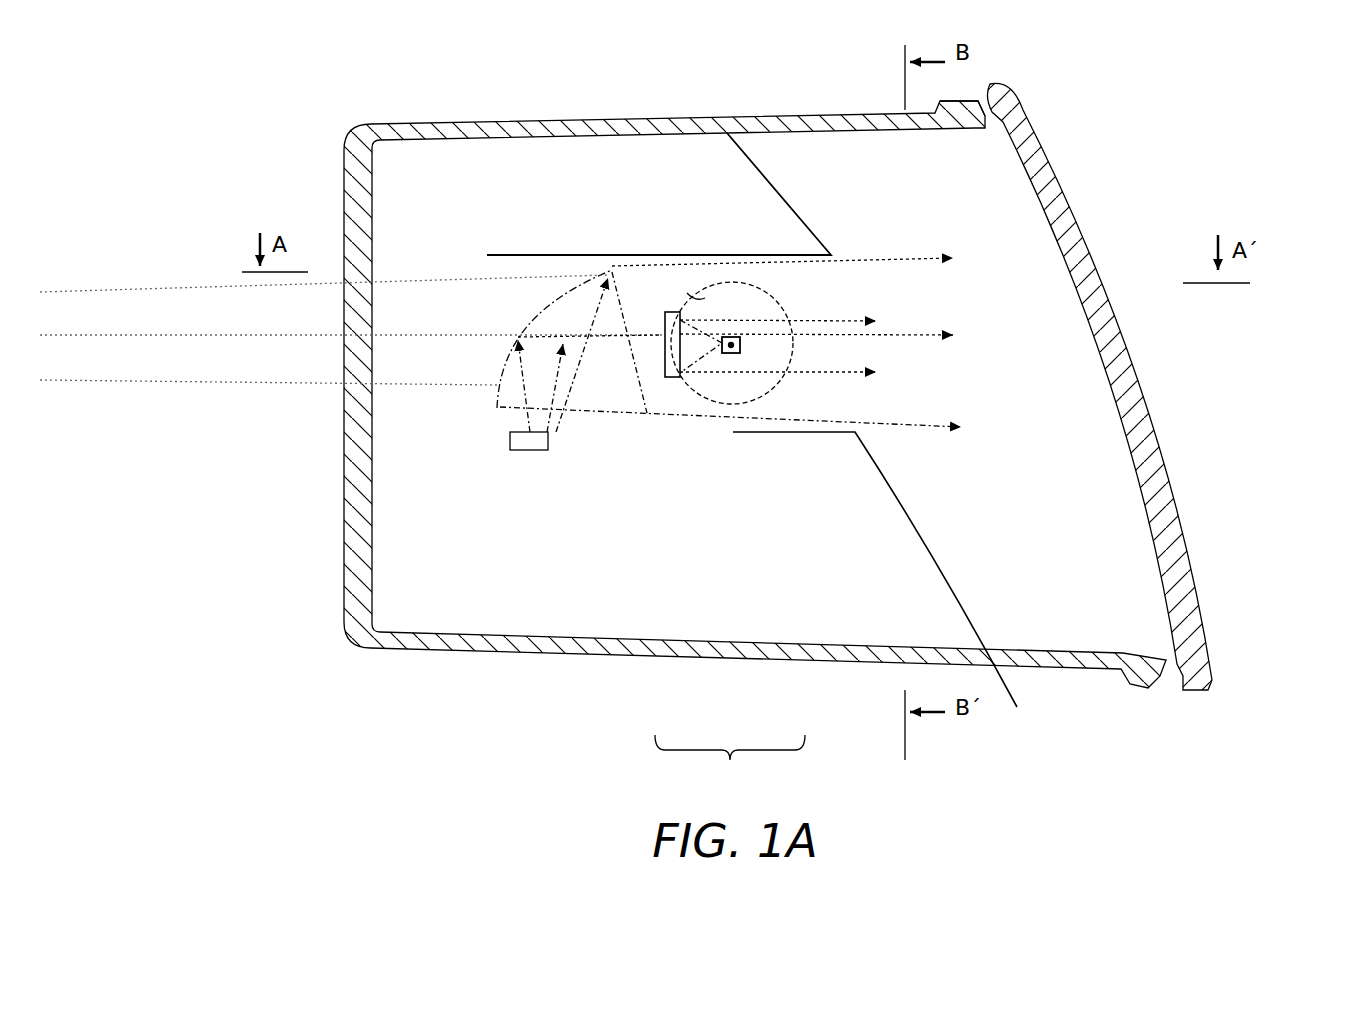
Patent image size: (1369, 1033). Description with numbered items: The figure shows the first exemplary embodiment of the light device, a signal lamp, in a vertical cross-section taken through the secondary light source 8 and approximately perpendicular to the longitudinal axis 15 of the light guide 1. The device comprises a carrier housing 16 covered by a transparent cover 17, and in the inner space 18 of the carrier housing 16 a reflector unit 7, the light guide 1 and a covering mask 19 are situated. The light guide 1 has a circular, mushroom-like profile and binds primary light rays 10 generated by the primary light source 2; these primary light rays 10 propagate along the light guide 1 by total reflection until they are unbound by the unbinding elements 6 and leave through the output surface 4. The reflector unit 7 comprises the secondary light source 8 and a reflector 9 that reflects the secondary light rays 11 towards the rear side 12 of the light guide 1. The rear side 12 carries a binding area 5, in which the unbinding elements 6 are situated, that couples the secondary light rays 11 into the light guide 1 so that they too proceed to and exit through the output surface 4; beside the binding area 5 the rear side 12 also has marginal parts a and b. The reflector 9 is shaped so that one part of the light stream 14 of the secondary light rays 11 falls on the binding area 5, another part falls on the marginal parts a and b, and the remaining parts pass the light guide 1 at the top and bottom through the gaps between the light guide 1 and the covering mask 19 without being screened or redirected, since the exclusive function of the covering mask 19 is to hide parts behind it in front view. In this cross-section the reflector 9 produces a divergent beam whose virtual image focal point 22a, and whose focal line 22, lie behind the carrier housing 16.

The light guide 1 is at (731, 356).
The primary light source 2 is at (740, 278).
The output surface 4 is at (800, 347).
The binding area 5 is at (681, 221).
The unbinding elements 6 is at (650, 332).
The reflector unit 7 is at (196, 425).
The secondary light source 8 is at (506, 442).
The reflector 9 is at (486, 372).
The primary light rays 10 is at (892, 322).
The secondary light rays 11 is at (553, 393).
The rear side 12 is at (658, 348).
The light stream 14 is at (730, 766).
The longitudinal axis 15 is at (886, 587).
The carrier housing 16 is at (345, 518).
The transparent cover 17 is at (1207, 600).
The inner space 18 is at (465, 527).
The covering mask 19 is at (834, 242).
The focal line 22 is at (45, 253).
The virtual image focal point 22a is at (170, 239).
The marginal part a is at (687, 293).
The marginal part b is at (733, 412).